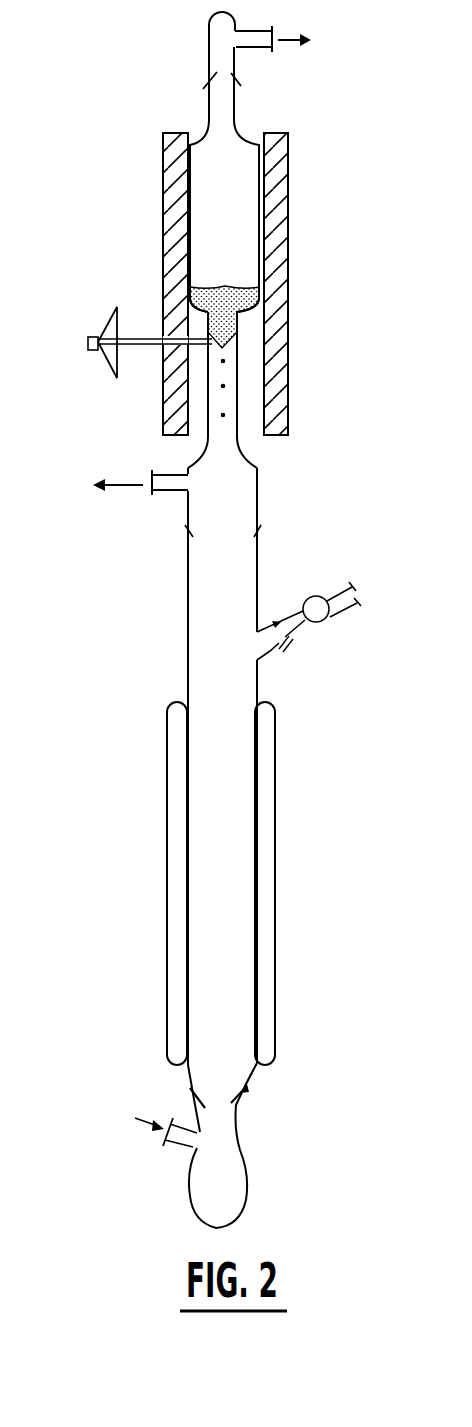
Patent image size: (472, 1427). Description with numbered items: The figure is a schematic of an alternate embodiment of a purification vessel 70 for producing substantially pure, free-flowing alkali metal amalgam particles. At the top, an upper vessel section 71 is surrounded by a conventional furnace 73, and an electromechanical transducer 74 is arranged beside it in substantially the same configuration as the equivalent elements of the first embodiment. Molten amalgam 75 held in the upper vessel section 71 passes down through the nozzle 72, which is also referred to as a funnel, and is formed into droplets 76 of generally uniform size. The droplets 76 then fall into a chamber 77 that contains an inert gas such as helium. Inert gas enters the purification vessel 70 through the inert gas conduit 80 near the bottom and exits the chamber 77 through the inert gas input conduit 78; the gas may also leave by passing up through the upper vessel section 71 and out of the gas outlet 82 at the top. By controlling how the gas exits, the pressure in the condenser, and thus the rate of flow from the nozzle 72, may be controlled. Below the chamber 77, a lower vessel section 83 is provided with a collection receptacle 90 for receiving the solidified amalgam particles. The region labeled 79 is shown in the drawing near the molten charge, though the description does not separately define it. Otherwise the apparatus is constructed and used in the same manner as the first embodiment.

The purification vessel 70 is at (120, 727).
The upper vessel section 71 is at (212, 185).
The nozzle 72 is at (245, 338).
The conventional furnace 73 is at (163, 430).
The electromechanical transducer 74 is at (93, 336).
The molten amalgam 75 is at (217, 293).
The droplets 76 is at (226, 363).
The chamber 77 is at (212, 578).
The inert gas input conduit 78 is at (165, 490).
The molten charge 79 is at (257, 293).
The inert gas conduit 80 is at (183, 1150).
The gas outlet 82 is at (258, 29).
The lower vessel section 83 is at (185, 805).
The collection receptacle 90 is at (232, 1193).